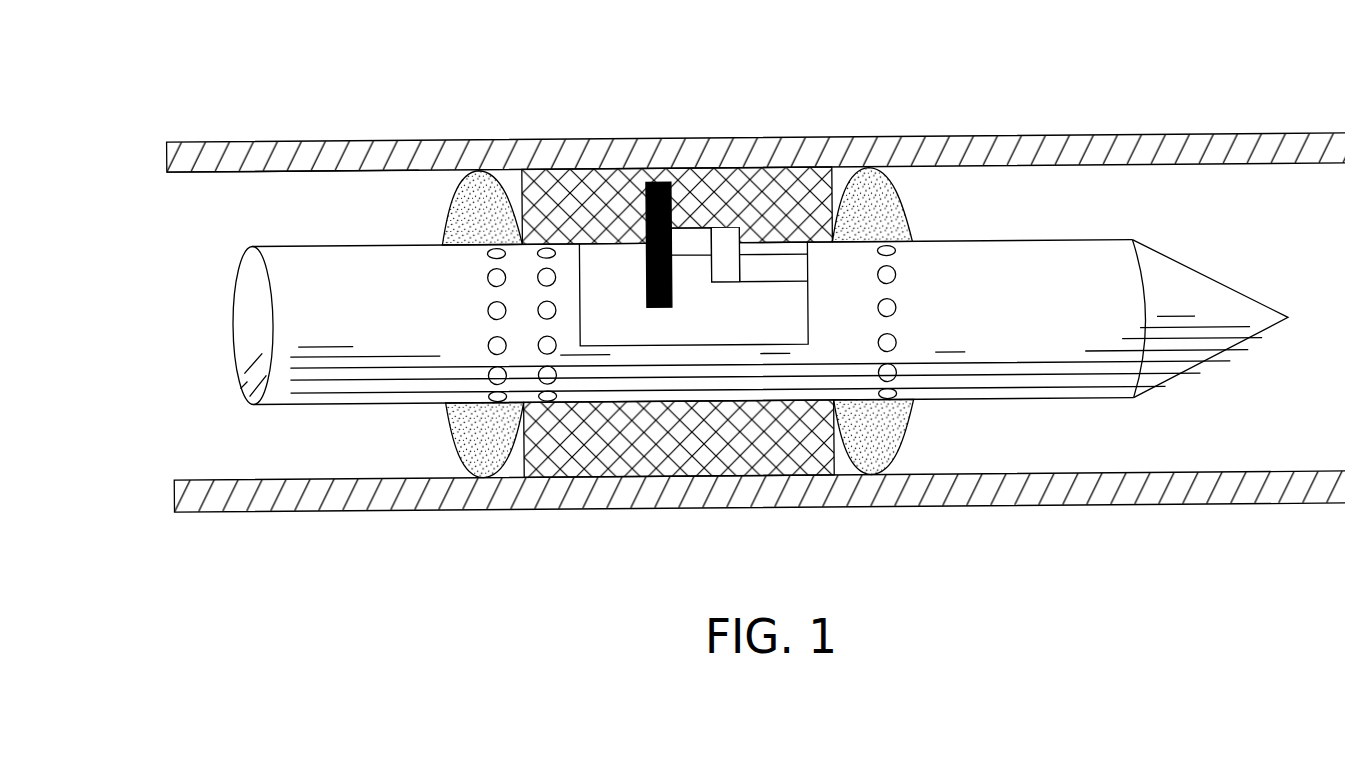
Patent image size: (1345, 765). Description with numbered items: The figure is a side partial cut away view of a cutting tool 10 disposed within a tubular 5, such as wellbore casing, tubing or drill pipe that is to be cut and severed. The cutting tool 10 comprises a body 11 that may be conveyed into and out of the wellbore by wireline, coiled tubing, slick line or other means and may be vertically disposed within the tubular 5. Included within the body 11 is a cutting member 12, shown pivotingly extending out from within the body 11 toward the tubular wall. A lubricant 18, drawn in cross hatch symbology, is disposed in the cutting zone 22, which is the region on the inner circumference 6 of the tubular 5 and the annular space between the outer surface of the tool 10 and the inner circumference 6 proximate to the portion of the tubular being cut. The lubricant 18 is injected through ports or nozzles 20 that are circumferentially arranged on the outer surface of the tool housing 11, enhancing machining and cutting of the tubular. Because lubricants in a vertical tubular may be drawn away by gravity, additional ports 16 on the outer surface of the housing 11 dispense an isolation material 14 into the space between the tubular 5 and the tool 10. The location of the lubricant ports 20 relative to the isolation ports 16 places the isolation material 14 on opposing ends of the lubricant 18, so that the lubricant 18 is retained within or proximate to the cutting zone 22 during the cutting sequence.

The tubular 5 is at (245, 141).
The inner circumference 6 is at (215, 172).
The cutting tool 10 is at (160, 346).
The body 11 is at (1198, 268).
The cutting member 12 is at (655, 182).
The isolation material 14 is at (455, 203).
The isolation ports 16 is at (888, 247).
The lubricant 18 is at (580, 192).
The lubricant ports 20 is at (547, 403).
The cutting zone 22 is at (756, 208).